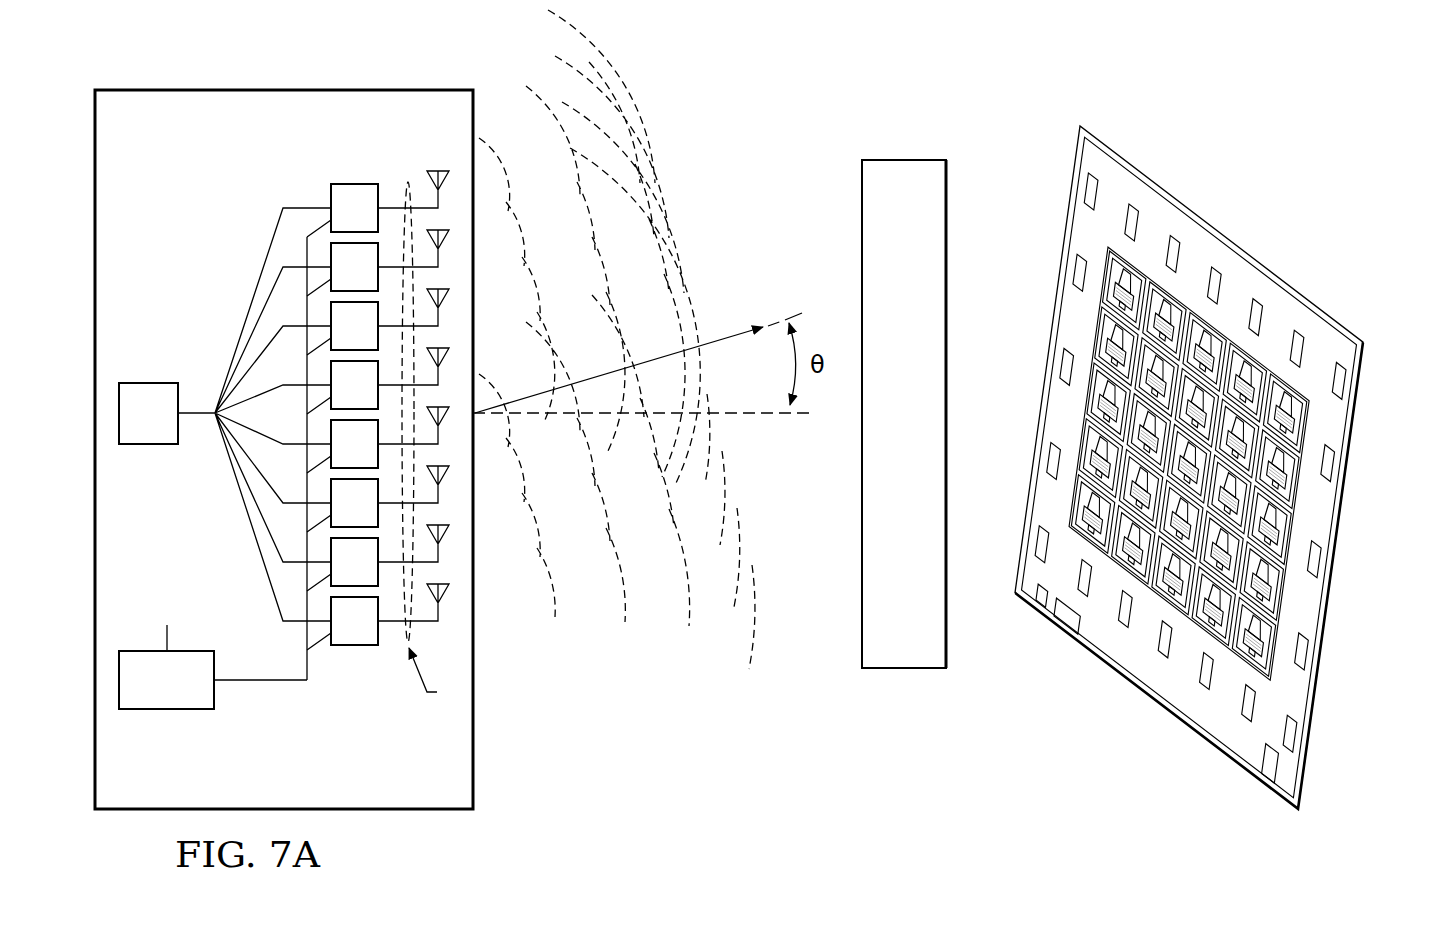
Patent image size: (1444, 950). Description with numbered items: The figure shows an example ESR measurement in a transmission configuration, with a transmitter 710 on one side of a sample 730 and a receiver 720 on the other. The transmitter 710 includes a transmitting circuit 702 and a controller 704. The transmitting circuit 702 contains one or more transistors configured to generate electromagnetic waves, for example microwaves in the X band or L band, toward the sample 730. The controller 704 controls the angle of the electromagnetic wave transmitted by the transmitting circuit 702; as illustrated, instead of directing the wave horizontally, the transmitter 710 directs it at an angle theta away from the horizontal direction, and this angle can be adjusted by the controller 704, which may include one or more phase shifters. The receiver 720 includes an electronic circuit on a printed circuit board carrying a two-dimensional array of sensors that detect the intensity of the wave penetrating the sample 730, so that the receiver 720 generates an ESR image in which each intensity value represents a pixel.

The transmitting circuit 702 is at (148, 383).
The controller 704 is at (155, 712).
The transmitter 710 is at (246, 87).
The receiver 720 is at (1189, 467).
The sample 730 is at (906, 157).